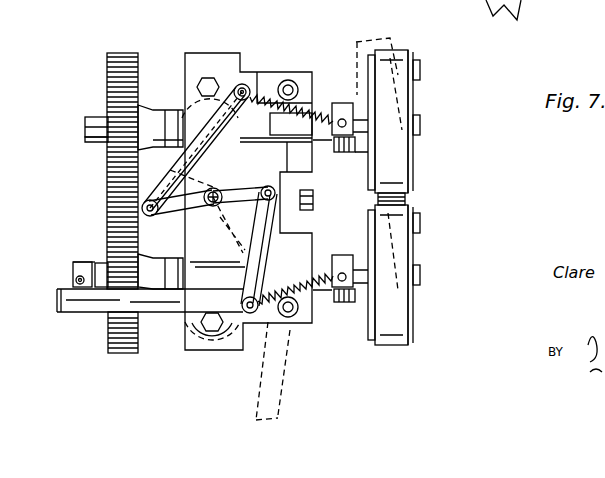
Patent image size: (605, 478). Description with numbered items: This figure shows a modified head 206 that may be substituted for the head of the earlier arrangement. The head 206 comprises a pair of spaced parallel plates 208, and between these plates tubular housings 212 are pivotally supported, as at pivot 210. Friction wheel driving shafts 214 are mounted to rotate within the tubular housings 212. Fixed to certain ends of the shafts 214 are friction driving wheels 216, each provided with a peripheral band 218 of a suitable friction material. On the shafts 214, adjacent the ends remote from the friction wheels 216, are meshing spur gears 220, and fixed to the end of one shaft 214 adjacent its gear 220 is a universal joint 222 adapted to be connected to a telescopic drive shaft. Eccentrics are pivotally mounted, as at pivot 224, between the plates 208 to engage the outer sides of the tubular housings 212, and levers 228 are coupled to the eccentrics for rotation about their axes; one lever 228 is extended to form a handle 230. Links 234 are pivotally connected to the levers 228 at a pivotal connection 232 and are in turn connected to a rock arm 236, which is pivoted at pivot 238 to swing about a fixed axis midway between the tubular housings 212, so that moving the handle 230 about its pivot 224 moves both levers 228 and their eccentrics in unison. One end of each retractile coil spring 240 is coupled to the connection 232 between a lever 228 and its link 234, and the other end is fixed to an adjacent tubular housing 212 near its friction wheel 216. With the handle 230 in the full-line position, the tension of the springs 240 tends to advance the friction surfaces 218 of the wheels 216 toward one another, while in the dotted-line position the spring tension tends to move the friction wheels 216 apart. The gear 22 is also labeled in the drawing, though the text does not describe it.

The gear 22 is at (118, 58).
The head 206 is at (236, 52).
The plates 208 is at (308, 158).
The pivot 210 is at (207, 77).
The tubular housings 212 is at (167, 118).
The friction wheel driving shafts 214 is at (95, 121).
The friction driving wheels 216 is at (417, 108).
The peripheral bands 218 is at (401, 222).
The meshing spur gears 220 is at (118, 353).
The universal joint 222 is at (78, 262).
The pivot 224 is at (292, 79).
The levers 228 is at (270, 82).
The handle 230 is at (79, 308).
The pivotal connection 232 is at (217, 274).
The links 234 is at (223, 133).
The rock arm 236 is at (197, 212).
The pivot 238 is at (225, 192).
The retractile coil spring 240 is at (340, 103).